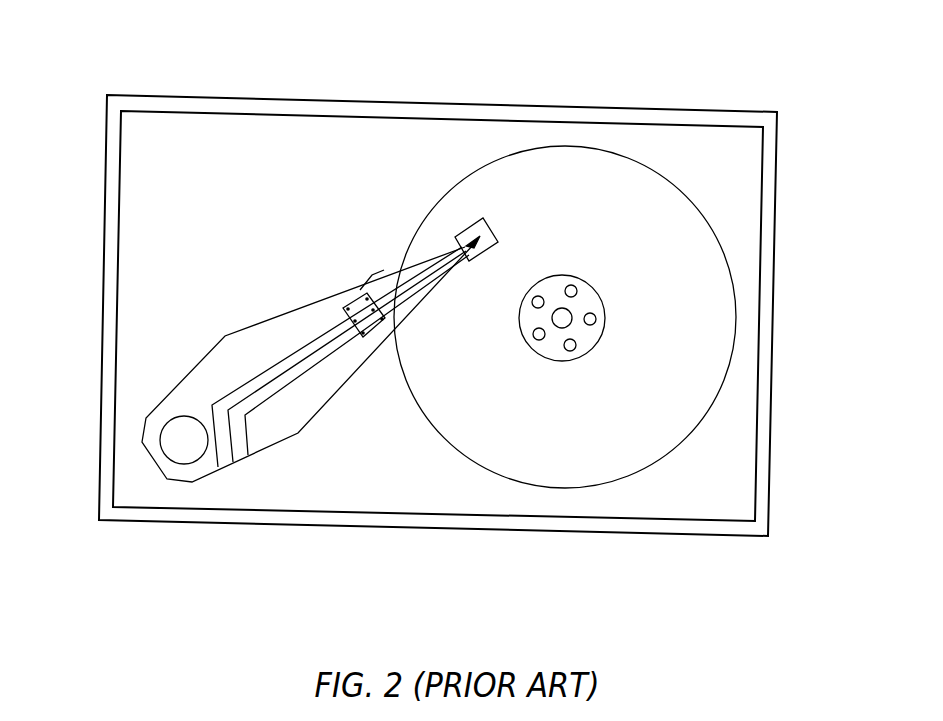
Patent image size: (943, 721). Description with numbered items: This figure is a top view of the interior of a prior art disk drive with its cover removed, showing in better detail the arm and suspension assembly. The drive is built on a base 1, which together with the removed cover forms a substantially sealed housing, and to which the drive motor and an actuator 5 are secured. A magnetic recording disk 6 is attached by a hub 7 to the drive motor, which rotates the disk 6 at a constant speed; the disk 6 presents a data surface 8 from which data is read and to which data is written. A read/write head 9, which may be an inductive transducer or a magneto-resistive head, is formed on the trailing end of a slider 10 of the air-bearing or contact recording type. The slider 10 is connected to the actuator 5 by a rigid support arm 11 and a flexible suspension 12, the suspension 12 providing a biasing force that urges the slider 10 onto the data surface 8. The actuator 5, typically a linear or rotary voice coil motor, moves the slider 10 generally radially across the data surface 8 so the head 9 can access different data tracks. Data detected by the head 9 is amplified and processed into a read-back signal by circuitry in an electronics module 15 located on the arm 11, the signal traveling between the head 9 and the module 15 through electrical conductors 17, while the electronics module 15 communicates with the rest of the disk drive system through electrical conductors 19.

The base 1 is at (768, 180).
The actuator 5 is at (178, 457).
The magnetic recording disk 6 is at (702, 422).
The hub 7 is at (593, 300).
The data surface 8 is at (598, 165).
The read/write head 9 is at (457, 265).
The slider 10 is at (477, 222).
The rigid support arm 11 is at (195, 383).
The flexible suspension 12 is at (385, 318).
The electronics module 15 is at (343, 308).
The electrical conductors 17 is at (382, 277).
The electrical conductors 19 is at (255, 400).